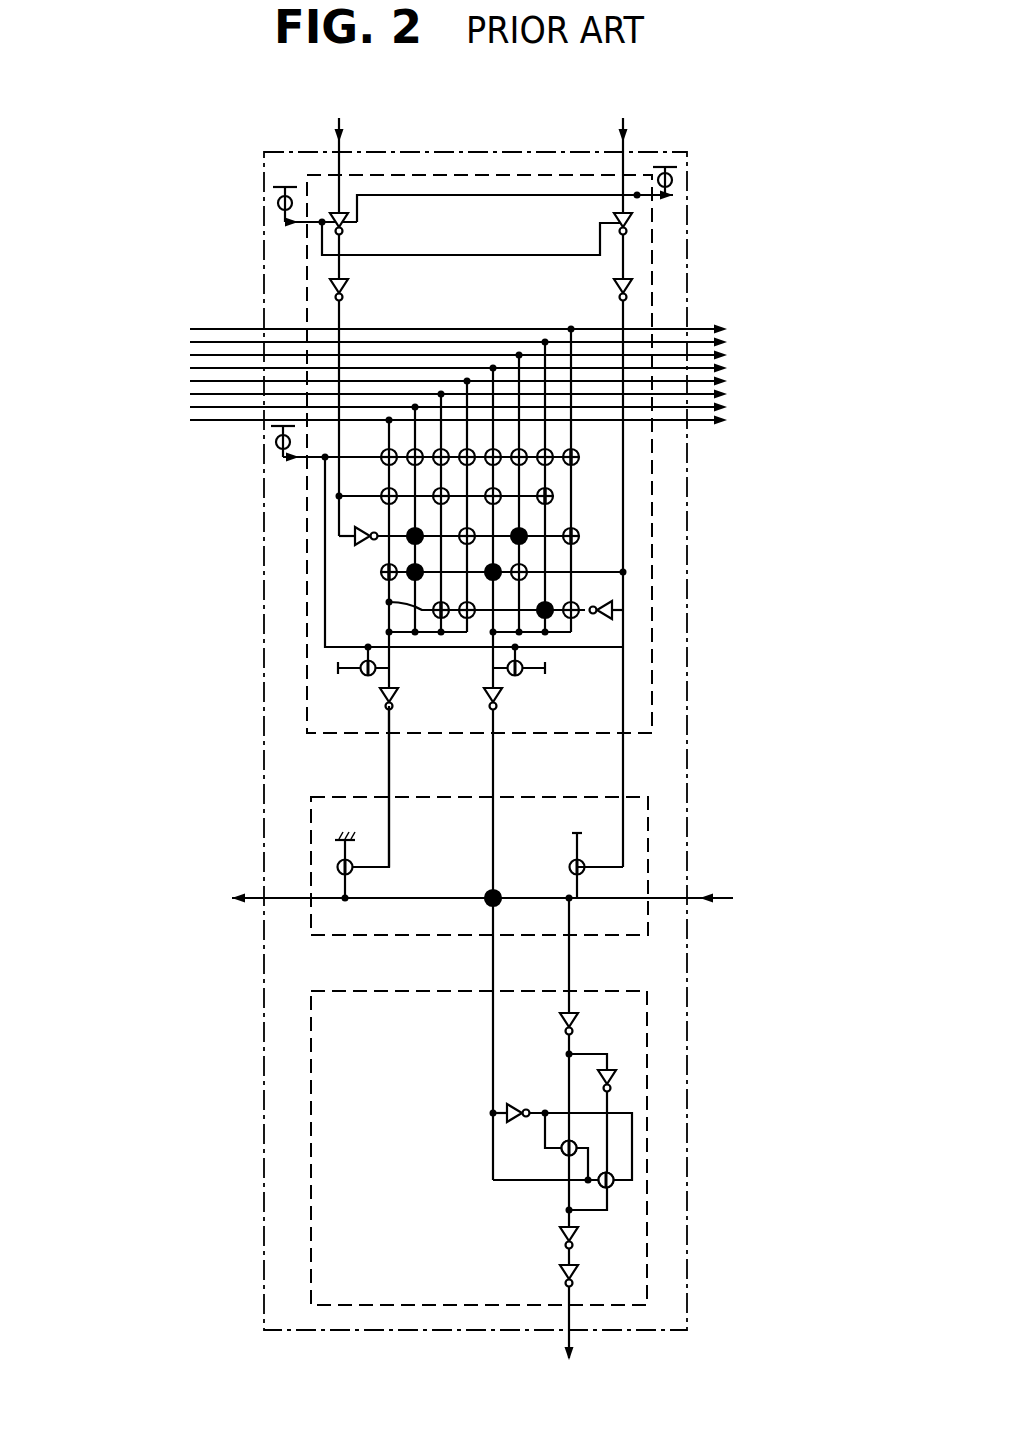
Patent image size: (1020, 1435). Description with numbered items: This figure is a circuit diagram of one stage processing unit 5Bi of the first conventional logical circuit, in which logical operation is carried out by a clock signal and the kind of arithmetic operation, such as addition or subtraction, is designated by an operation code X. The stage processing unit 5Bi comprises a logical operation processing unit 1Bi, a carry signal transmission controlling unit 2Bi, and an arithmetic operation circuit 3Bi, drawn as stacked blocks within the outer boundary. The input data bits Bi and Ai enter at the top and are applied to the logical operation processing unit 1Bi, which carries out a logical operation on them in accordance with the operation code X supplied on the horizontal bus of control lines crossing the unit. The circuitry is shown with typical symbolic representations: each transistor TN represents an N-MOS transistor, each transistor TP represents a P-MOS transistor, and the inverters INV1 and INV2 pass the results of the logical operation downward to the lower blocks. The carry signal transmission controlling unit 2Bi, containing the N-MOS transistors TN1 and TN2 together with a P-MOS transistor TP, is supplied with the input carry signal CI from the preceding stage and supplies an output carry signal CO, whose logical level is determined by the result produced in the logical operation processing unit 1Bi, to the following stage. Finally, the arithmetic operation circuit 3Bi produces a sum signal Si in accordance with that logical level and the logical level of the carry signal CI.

The logical operation processing unit 1Bi is at (652, 485).
The carry signal transmission controlling unit 2Bi is at (648, 800).
The arithmetic operation circuit 3Bi is at (311, 1033).
The stage processing unit 5Bi is at (264, 564).
The operation code X is at (186, 322).
The input data bit Bi is at (339, 313).
The input data bit Ai is at (622, 478).
The N-MOS transistor TN is at (383, 453).
The P-MOS transistor TP is at (363, 675).
The N-MOS transistor TN1 is at (488, 892).
The N-MOS transistor TN2 is at (353, 872).
The inverter INV1 is at (500, 700).
The inverter INV2 is at (396, 700).
The output carry signal CO is at (224, 887).
The input carry signal CI is at (771, 887).
The sum signal Si is at (584, 1132).